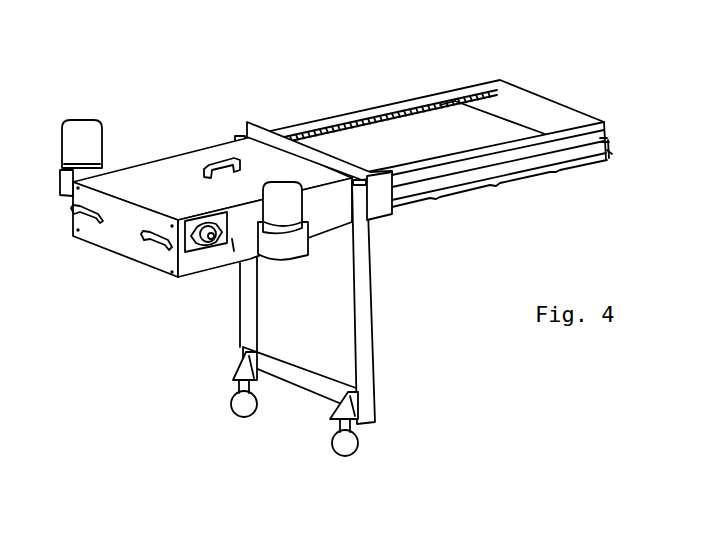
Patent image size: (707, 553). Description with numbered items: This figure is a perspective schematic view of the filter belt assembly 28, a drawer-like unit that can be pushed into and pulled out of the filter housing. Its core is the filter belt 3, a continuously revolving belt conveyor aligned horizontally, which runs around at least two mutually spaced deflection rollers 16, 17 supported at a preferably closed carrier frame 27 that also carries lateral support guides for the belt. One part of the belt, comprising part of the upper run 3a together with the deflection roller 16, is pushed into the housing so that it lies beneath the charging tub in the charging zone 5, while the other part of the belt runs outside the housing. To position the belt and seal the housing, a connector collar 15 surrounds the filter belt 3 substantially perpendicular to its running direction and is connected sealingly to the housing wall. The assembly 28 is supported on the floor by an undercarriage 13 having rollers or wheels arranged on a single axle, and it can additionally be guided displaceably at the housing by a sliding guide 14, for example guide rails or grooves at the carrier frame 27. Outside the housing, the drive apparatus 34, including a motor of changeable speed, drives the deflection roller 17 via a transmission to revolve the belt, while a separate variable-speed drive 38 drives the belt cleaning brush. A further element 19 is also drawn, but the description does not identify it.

The filter belt 3 is at (412, 134).
The upper run 3a is at (371, 131).
The charging zone 5 is at (425, 107).
The undercarriage 13 is at (375, 441).
The sliding guide 14 is at (590, 150).
The connector collar 15 is at (391, 222).
The deflection roller 16 is at (542, 158).
The deflection roller 17 is at (194, 260).
The rear strip 19 is at (336, 127).
The carrier frame 27 is at (603, 138).
The drawer-like assembly 28 is at (194, 146).
The drive apparatus 34 is at (78, 131).
The drive 38 is at (296, 215).